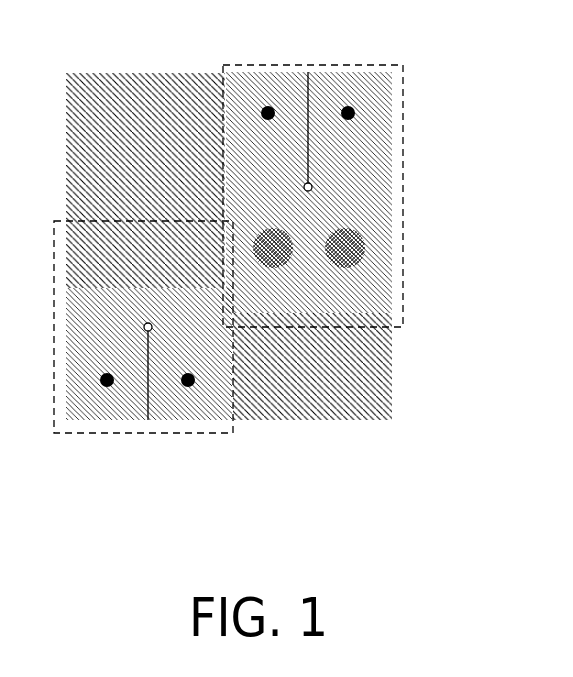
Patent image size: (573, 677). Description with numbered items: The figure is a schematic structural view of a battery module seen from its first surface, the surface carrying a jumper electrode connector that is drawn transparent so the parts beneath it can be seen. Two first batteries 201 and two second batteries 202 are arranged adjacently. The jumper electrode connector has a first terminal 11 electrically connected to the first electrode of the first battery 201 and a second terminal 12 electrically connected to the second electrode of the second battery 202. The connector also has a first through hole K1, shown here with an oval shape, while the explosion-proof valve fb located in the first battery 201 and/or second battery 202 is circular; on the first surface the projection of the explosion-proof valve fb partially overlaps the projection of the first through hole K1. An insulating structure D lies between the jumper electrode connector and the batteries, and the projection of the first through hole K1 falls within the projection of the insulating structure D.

The second battery 202 is at (172, 72).
The first battery 201 is at (290, 421).
The first terminal 11 is at (388, 64).
The second terminal 12 is at (182, 434).
The insulating structure D is at (392, 212).
The first through hole K1 is at (393, 285).
The explosion-proof valve fb is at (393, 250).